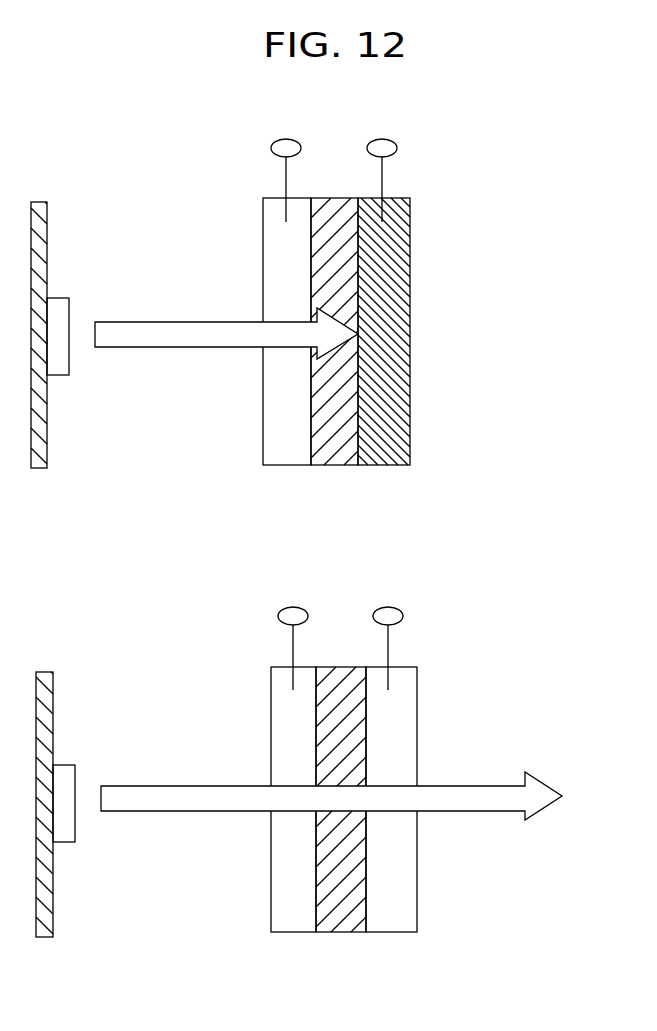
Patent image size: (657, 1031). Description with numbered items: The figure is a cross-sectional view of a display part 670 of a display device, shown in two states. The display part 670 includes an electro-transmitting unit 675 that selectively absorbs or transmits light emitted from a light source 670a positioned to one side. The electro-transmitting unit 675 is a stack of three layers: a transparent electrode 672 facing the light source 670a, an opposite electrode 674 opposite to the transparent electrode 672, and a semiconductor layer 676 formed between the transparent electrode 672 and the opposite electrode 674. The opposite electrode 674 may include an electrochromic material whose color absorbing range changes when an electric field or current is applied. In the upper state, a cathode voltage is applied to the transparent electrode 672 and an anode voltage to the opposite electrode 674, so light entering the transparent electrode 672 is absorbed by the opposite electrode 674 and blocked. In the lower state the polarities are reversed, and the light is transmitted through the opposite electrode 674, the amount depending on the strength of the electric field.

The display part 670 is at (378, 561).
The light source 670a is at (63, 365).
The transparent electrode 672 is at (290, 448).
The opposite electrode 674 is at (387, 587).
The electro-transmitting unit 675 is at (340, 607).
The semiconductor layer 676 is at (340, 446).